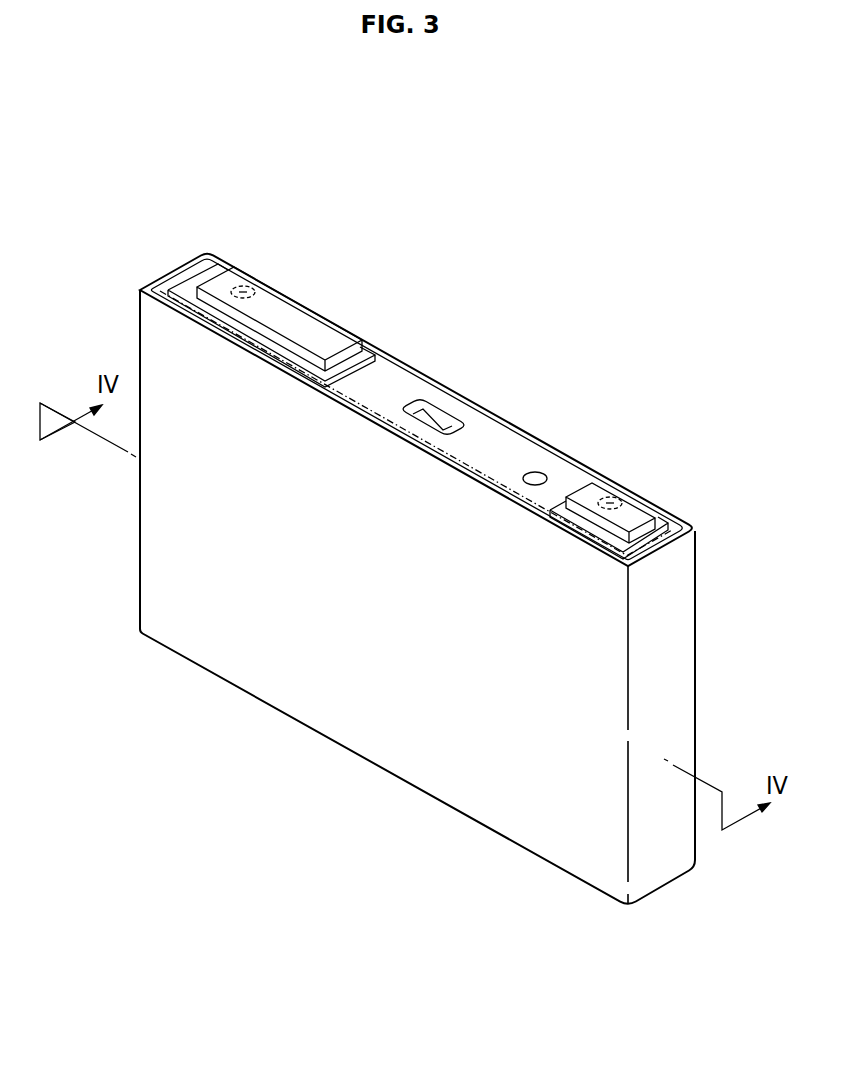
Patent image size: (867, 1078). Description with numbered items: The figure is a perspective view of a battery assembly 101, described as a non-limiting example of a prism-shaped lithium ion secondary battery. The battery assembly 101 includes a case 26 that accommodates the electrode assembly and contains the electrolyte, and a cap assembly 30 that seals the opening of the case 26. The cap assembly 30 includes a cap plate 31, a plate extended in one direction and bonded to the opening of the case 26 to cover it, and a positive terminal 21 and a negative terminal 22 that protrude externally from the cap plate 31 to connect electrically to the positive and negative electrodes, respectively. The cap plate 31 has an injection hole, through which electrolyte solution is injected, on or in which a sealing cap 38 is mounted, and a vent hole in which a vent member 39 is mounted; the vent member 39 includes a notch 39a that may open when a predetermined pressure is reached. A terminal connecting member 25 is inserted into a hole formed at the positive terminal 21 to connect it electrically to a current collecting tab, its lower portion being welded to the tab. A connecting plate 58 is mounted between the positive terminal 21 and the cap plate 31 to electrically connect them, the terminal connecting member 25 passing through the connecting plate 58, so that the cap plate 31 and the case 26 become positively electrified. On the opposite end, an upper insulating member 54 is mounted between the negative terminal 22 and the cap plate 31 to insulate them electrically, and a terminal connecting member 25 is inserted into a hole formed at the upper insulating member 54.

The battery assembly 101 is at (475, 213).
The case 26 is at (357, 727).
The cap assembly 30 is at (440, 382).
The cap plate 31 is at (393, 381).
The positive terminal 21 is at (632, 505).
The negative terminal 22 is at (294, 308).
The terminal connecting member 25 is at (240, 289).
The sealing cap 38 is at (535, 472).
The vent member 39 is at (459, 381).
The notch 39a is at (444, 416).
The upper insulating member 54 is at (193, 284).
The connecting plate 58 is at (655, 512).